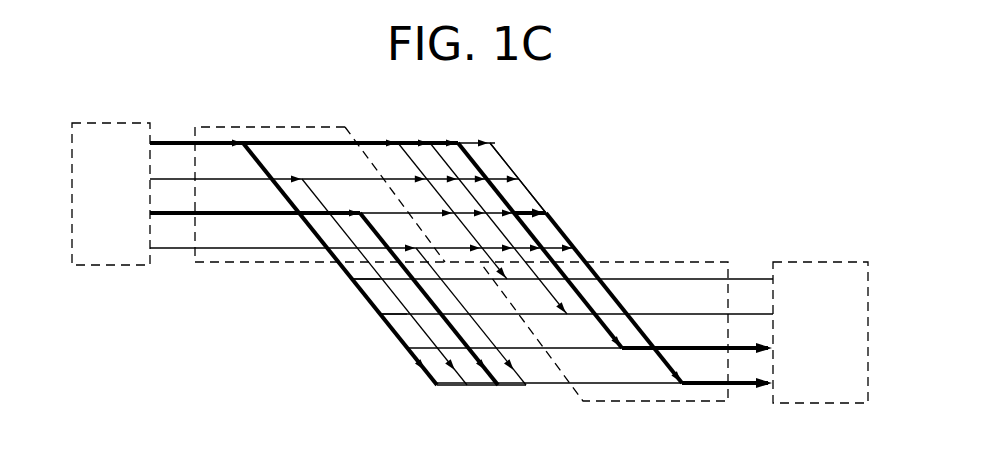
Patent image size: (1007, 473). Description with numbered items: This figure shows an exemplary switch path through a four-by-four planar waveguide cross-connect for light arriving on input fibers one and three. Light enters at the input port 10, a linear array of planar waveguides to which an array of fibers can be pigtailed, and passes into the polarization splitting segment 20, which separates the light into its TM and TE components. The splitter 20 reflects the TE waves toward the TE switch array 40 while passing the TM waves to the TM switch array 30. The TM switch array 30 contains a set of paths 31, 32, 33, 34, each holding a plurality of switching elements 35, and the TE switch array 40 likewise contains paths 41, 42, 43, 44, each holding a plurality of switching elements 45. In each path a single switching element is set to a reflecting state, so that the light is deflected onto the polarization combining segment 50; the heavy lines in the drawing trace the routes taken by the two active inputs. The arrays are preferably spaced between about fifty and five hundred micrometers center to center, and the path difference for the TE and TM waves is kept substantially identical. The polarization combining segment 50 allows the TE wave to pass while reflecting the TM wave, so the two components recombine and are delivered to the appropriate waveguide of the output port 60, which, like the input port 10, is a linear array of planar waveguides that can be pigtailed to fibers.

The input port 10 is at (122, 123).
The polarization splitting segment 20 is at (345, 128).
The TM switch array 30 is at (503, 131).
The path 31 is at (410, 142).
The path 32 is at (428, 177).
The path 33 is at (455, 212).
The path 34 is at (483, 247).
The switching elements 35 is at (500, 143).
The TE switch array 40 is at (402, 384).
The path 41 is at (433, 384).
The path 42 is at (463, 384).
The path 43 is at (494, 384).
The path 44 is at (522, 384).
The switching elements 45 is at (407, 348).
The polarization combining segment 50 is at (663, 402).
The output port 60 is at (830, 405).